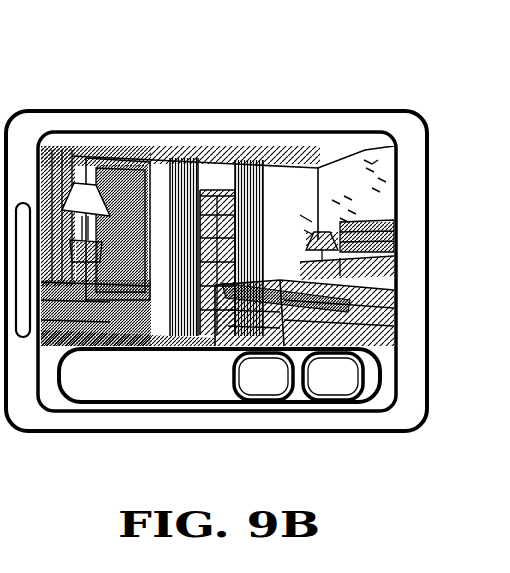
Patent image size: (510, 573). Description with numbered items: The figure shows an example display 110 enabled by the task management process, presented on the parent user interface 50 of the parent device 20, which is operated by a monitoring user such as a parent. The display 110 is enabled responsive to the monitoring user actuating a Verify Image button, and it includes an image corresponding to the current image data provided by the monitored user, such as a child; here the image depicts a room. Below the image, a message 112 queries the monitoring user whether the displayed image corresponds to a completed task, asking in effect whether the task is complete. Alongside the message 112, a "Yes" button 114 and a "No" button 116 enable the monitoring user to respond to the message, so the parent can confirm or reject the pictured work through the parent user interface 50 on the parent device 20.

The parent device 20 is at (257, 66).
The parent user interface 50 is at (153, 122).
The example display 110 is at (329, 150).
The message 112 is at (160, 397).
The "Yes" button 114 is at (263, 389).
The "No" button 116 is at (335, 390).